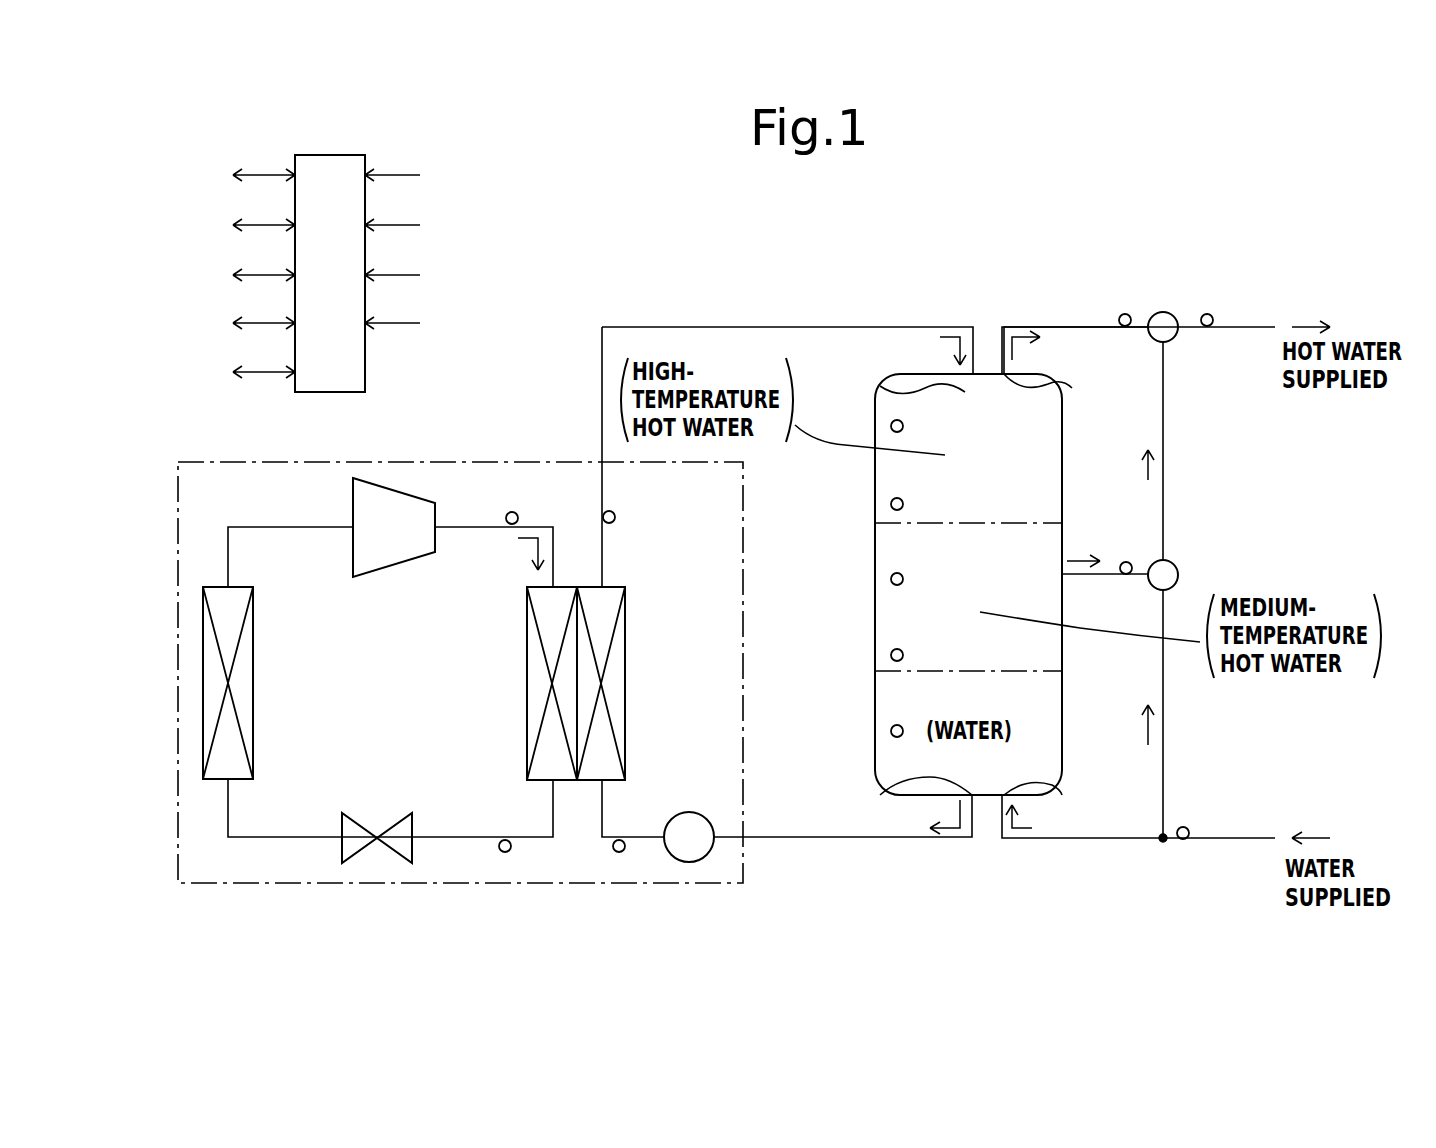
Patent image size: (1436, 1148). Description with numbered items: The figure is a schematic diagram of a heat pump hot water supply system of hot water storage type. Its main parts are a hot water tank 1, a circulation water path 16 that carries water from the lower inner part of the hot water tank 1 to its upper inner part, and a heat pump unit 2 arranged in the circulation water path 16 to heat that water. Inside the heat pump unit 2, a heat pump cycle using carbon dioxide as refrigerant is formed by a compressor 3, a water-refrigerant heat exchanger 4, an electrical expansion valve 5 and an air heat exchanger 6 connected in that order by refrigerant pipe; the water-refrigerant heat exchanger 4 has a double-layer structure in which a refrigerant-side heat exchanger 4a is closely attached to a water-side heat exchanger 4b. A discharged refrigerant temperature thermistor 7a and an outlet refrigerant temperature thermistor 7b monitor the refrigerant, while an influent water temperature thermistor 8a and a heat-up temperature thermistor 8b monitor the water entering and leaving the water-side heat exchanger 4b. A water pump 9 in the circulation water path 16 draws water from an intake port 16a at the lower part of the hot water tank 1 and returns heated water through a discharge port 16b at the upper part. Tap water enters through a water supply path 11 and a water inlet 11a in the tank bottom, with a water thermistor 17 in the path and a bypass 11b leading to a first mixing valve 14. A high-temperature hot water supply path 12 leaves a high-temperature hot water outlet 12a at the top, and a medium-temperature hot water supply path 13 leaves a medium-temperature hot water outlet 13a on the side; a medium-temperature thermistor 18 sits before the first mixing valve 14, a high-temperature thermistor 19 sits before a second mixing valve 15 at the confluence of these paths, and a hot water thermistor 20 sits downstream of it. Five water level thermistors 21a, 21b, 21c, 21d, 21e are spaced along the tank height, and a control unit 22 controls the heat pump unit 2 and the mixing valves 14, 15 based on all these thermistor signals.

The hot water tank 1 is at (924, 366).
The heat pump unit 2 is at (490, 460).
The compressor 3 is at (400, 546).
The water-refrigerant heat exchanger 4 is at (570, 683).
The refrigerant-side heat exchanger 4a is at (527, 678).
The water-side heat exchanger 4b is at (625, 680).
The electrical expansion valve 5 is at (375, 814).
The air heat exchanger 6 is at (253, 688).
The discharged refrigerant temperature thermistor 7a is at (516, 512).
The outlet refrigerant temperature thermistor 7b is at (505, 852).
The influent water temperature thermistor 8a is at (619, 852).
The heat-up temperature thermistor 8b is at (615, 517).
The water pump 9 is at (689, 812).
The water supply path 11 is at (1078, 840).
The water inlet 11a is at (1062, 797).
The bypass 11b is at (1165, 715).
The high-temperature hot water supply path 12 is at (1092, 325).
The high-temperature hot water outlet 12a is at (1062, 388).
The medium-temperature hot water supply path 13 is at (1163, 468).
The medium-temperature hot water outlet 13a is at (1062, 578).
The first mixing valve 14 is at (1166, 572).
The second mixing valve 15 is at (1172, 317).
The circulation water path 16 is at (858, 840).
The intake port 16a is at (881, 793).
The discharge port 16b is at (890, 386).
The water thermistor 17 is at (1188, 828).
The medium-temperature thermistor 18 is at (1124, 562).
The high-temperature thermistor 19 is at (1128, 315).
The hot water thermistor 20 is at (1212, 315).
The water level thermistor 21a is at (891, 426).
The water level thermistor 21b is at (891, 504).
The water level thermistor 21c is at (891, 579).
The water level thermistor 21d is at (891, 655).
The water level thermistor 21e is at (891, 731).
The control unit 22 is at (346, 290).